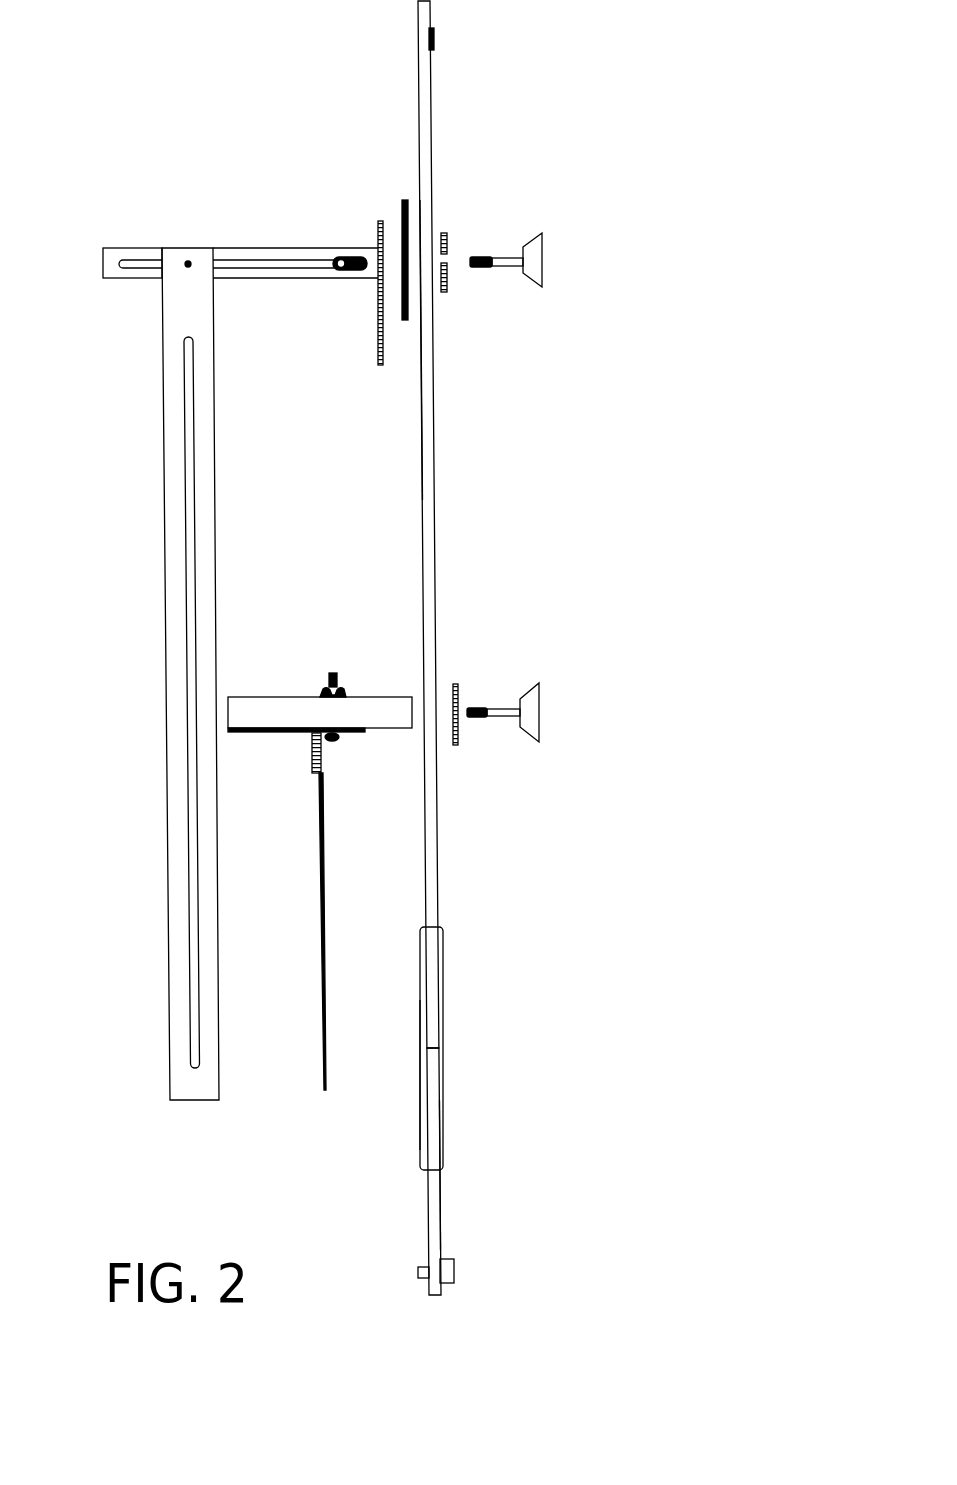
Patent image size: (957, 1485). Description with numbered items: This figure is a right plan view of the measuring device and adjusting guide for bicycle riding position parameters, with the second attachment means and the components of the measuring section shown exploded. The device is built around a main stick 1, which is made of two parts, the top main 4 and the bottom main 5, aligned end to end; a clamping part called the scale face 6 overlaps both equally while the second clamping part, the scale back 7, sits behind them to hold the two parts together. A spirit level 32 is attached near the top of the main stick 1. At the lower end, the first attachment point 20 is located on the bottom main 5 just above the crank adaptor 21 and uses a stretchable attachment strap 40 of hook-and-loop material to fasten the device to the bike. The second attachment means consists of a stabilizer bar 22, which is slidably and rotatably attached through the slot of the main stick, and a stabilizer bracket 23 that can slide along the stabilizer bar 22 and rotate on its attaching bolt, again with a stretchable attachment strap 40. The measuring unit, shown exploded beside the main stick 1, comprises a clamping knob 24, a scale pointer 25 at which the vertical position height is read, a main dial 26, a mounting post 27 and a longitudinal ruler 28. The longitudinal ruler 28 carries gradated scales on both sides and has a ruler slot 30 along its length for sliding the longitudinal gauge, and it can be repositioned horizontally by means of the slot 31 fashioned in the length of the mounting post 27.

The main stick 1 is at (433, 502).
The top main 4 is at (420, 445).
The bottom main 5 is at (428, 1235).
The scale face 6 is at (442, 1002).
The scale back 7 is at (419, 1113).
The first attachment point 20 is at (440, 1222).
The crank adaptor 21 is at (455, 1270).
The stabilizer bar 22 is at (245, 697).
The stabilizer bracket 23 is at (310, 753).
The clamping knob 24 is at (546, 257).
The scale pointer 25 is at (448, 248).
The main dial 26 is at (402, 197).
The mounting post 27 is at (282, 240).
The longitudinal ruler 28 is at (175, 427).
The ruler slot 30 is at (186, 712).
The slot 31 is at (142, 258).
The spirit level 32 is at (434, 42).
The stretchable attachment strap 40 is at (325, 855).